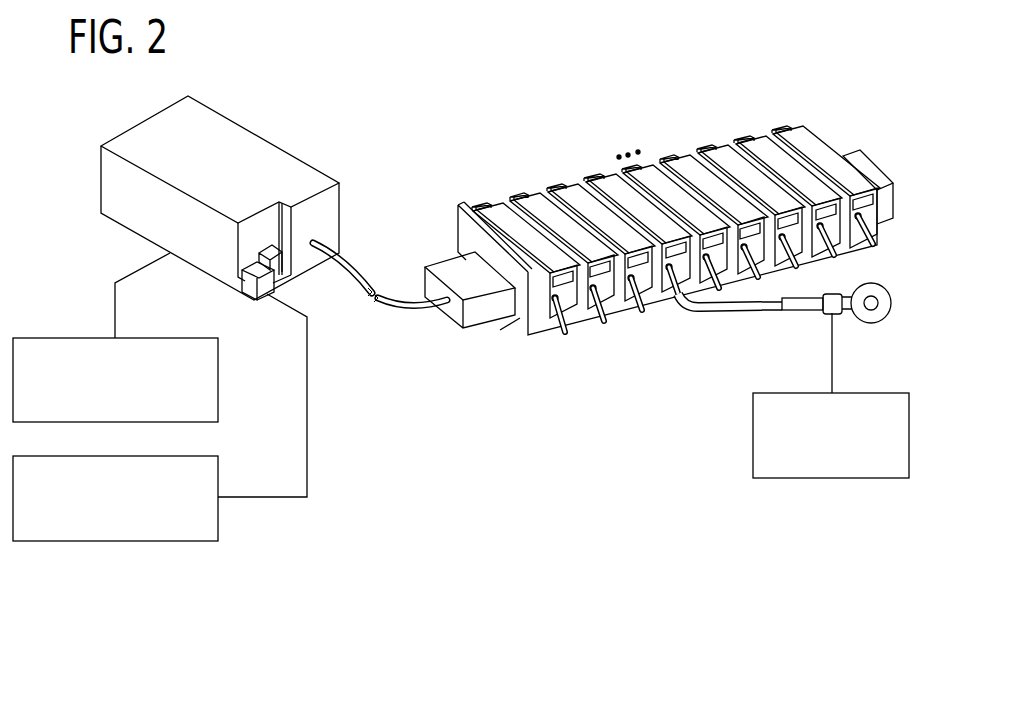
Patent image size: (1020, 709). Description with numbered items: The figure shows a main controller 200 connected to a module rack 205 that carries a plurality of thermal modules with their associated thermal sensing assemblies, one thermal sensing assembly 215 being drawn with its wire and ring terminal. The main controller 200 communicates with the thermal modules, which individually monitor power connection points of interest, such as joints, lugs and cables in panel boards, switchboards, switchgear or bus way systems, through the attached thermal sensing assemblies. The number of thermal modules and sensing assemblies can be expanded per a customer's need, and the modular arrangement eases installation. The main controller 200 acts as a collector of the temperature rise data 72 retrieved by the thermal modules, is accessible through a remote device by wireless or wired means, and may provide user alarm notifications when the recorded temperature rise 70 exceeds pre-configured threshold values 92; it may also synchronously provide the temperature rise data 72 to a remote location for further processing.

The main controller 200 is at (233, 150).
The module rack 205 is at (468, 237).
The thermal sensing assembly 215 is at (828, 316).
The temperature rise data 72 is at (218, 378).
The pre-configured threshold values 92 is at (218, 478).
The temperature rise 70 is at (753, 433).